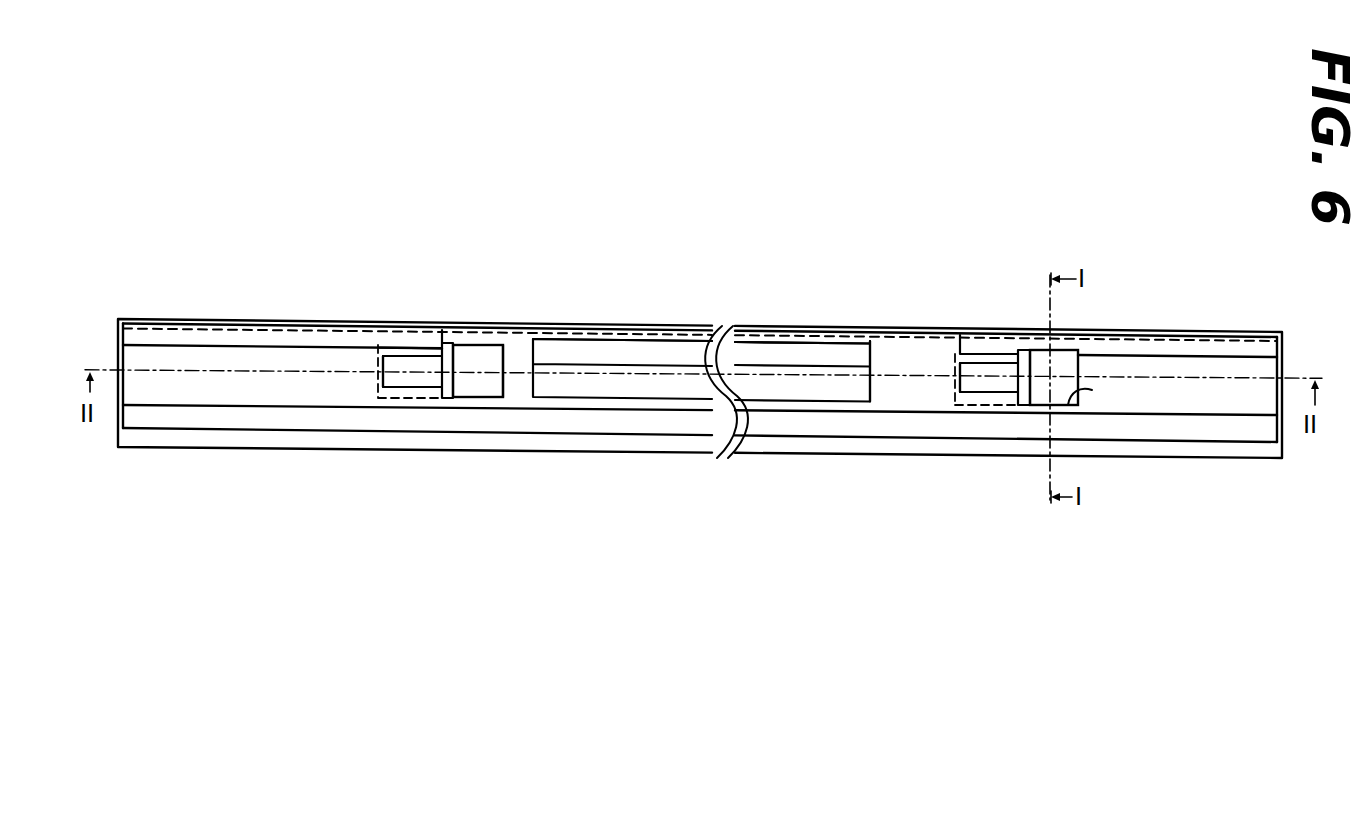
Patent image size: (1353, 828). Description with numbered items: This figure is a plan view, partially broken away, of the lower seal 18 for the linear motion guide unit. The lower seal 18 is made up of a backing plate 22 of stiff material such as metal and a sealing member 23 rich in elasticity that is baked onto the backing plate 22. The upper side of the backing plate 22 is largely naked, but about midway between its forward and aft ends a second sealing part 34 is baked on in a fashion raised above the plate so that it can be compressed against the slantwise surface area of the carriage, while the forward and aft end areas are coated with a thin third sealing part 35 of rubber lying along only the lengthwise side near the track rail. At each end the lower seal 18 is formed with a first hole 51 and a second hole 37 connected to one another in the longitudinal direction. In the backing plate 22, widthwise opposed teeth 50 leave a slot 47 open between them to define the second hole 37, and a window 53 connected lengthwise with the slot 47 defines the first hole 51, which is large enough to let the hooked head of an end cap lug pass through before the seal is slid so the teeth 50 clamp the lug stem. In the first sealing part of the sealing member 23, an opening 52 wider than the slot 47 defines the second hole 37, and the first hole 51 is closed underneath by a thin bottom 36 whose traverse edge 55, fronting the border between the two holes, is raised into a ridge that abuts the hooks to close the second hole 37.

The lower seal 18 is at (784, 327).
The backing plate 22 is at (517, 378).
The sealing member 23 is at (610, 350).
The second sealing part 34 is at (667, 371).
The third sealing part 35 is at (281, 336).
The thin bottom 36 is at (483, 357).
The second hole 37 is at (402, 382).
The slot 47 is at (407, 362).
The teeth 50 is at (421, 352).
The first hole 51 is at (478, 390).
The opening 52 is at (396, 389).
The window 53 is at (1092, 390).
The traverse edge 55 is at (447, 400).